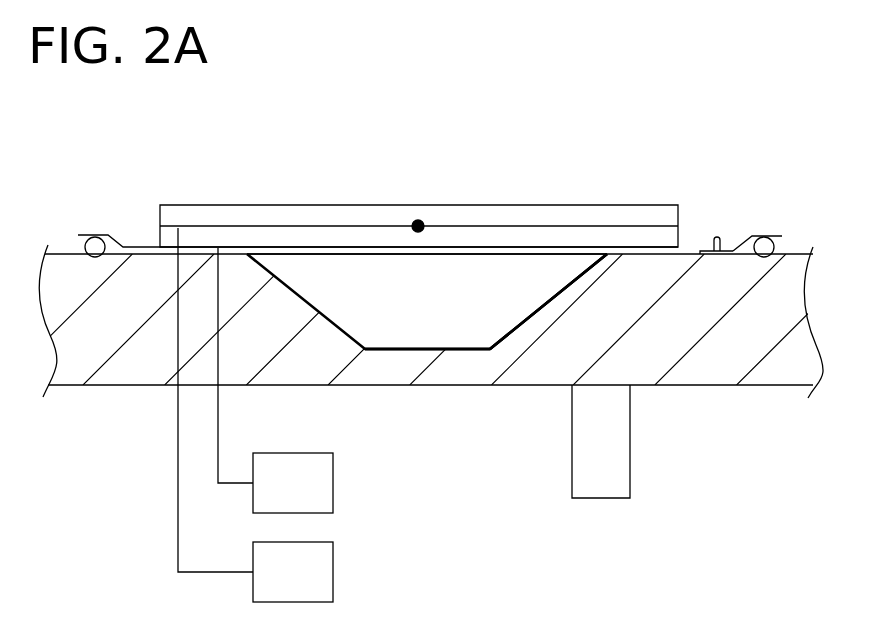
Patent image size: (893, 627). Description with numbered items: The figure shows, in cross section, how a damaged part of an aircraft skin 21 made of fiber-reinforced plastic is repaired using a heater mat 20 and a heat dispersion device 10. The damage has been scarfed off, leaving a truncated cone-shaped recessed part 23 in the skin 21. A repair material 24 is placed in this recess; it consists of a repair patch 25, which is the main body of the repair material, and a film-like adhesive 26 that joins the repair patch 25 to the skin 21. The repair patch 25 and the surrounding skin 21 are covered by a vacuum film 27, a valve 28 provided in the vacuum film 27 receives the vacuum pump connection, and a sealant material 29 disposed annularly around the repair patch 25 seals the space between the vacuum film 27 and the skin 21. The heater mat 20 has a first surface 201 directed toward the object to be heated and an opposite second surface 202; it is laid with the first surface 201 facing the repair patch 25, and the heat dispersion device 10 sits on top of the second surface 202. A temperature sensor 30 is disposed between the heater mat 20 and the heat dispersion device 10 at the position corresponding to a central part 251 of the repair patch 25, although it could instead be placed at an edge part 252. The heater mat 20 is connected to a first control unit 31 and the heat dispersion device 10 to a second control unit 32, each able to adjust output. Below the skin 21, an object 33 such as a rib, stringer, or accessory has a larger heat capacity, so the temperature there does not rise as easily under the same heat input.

The heat dispersion device 10 is at (328, 215).
The heater mat 20 is at (283, 235).
The first surface 201 is at (337, 252).
The second surface 202 is at (246, 226).
The skin 21 is at (795, 255).
The recessed part 23 is at (590, 275).
The repair material 24 is at (577, 157).
The repair patch 25 is at (500, 273).
The central part 251 is at (402, 257).
The edge part 252 is at (260, 257).
The film-like adhesive 26 is at (572, 280).
The vacuum film 27 is at (742, 246).
The valve 28 is at (717, 237).
The sealant material 29 is at (764, 237).
The temperature sensor 30 is at (420, 224).
The first control unit 31 is at (333, 485).
The second control unit 32 is at (333, 560).
The object 33 is at (630, 478).